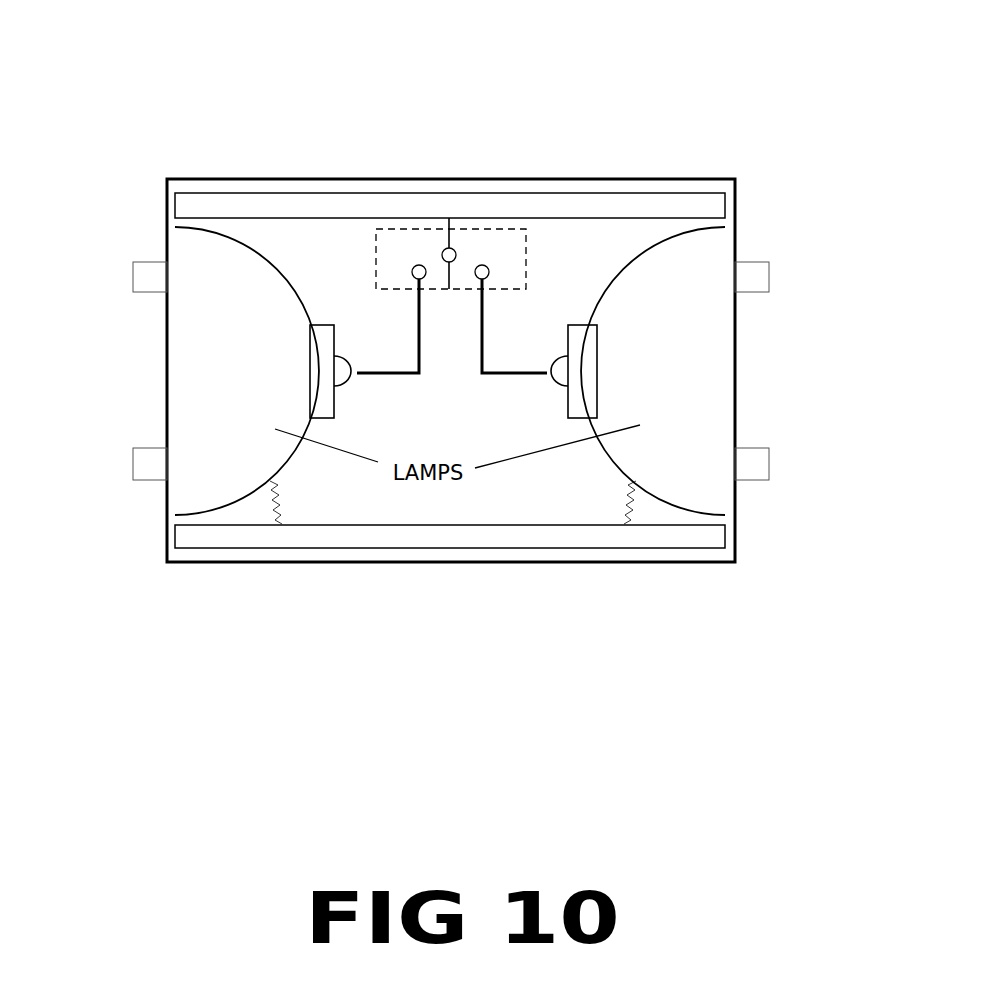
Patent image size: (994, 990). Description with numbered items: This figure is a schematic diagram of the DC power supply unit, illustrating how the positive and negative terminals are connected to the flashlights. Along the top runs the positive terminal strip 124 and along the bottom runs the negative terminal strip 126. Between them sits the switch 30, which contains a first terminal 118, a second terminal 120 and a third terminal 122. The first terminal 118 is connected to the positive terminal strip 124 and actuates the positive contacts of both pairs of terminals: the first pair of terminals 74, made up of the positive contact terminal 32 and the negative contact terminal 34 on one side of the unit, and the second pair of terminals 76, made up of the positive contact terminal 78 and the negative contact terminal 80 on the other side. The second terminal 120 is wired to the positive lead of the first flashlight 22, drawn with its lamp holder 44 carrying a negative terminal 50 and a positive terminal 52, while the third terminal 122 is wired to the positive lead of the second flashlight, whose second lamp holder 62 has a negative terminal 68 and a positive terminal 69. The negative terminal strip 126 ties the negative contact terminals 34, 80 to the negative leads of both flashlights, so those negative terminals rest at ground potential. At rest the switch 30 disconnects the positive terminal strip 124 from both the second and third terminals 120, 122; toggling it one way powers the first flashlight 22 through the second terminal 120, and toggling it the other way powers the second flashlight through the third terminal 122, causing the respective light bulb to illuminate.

The flashlight 22 is at (206, 362).
The switch 30 is at (483, 238).
The positive contact terminal 32 is at (157, 272).
The negative contact terminal 34 is at (155, 475).
The lamp socket 44 is at (317, 350).
The negative terminal 50 is at (275, 484).
The positive terminal 52 is at (350, 374).
The second lamp holder 62 is at (578, 358).
The negative terminal 68 is at (560, 374).
The positive terminal 69 is at (620, 500).
The first pair of terminals 74 is at (143, 462).
The second pair of terminals 76 is at (750, 465).
The positive contact terminal 78 is at (742, 270).
The negative contact terminal 80 is at (750, 470).
The first terminal 118 is at (456, 253).
The second terminal 120 is at (413, 269).
The third terminal 122 is at (487, 278).
The positive terminal strip 124 is at (273, 205).
The negative terminal strip 126 is at (235, 535).